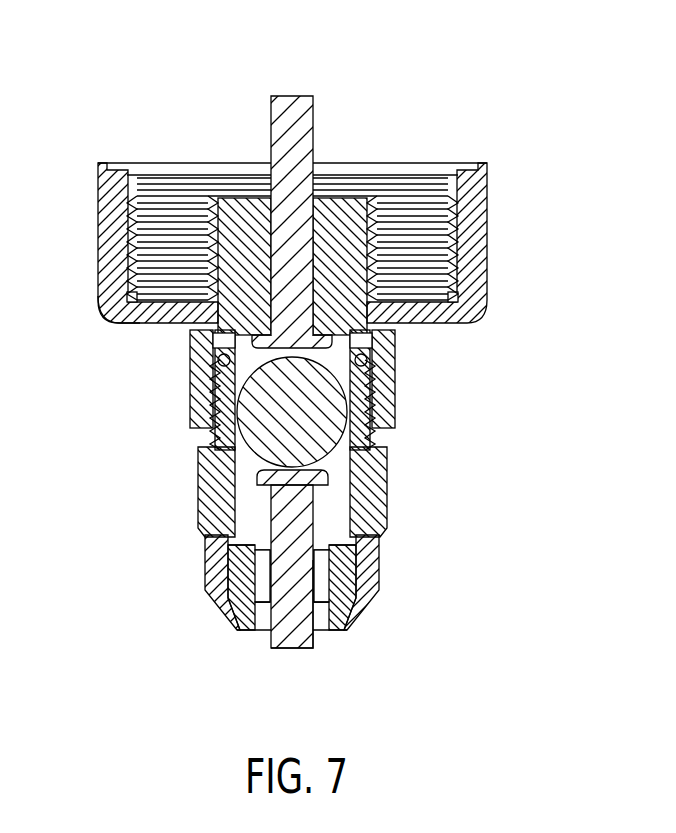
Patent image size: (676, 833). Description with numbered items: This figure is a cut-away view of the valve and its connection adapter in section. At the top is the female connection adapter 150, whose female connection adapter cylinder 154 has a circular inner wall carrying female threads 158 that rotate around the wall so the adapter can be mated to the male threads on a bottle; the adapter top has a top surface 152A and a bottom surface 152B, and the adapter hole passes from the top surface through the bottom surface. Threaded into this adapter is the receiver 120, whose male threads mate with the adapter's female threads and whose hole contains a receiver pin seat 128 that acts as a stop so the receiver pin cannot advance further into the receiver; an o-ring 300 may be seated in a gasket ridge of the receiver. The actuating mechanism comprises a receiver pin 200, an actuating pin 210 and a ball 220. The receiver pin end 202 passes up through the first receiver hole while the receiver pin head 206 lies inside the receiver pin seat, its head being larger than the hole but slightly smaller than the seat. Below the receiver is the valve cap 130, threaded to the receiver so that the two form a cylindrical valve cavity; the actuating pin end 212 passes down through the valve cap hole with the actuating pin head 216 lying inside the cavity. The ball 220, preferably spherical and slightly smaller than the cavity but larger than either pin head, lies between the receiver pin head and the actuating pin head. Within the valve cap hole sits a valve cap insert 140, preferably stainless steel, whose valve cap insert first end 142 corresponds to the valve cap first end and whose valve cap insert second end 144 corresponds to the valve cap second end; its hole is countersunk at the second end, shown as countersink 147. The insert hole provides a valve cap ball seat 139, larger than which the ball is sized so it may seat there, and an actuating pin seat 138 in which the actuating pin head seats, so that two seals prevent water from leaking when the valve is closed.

The receiver pin end 202 is at (296, 96).
The receiver pin 200 is at (346, 359).
The female threads 158 is at (187, 197).
The bottom surface 152B is at (132, 297).
The top surface 152A is at (130, 323).
The female connection adapter cylinder 154 is at (487, 215).
The female connection adapter 150 is at (304, 286).
The o-ring 300 is at (375, 338).
The receiver 120 is at (190, 350).
The receiver pin head 206 is at (352, 375).
The receiver pin seat 128 is at (212, 407).
The ball 220 is at (370, 420).
The valve cap 130 is at (198, 478).
The actuating pin head 216 is at (355, 488).
The valve cap insert first end 142 is at (237, 537).
The valve cap ball seat 139 is at (335, 545).
The actuating pin seat 138 is at (322, 583).
The valve cap insert 140 is at (215, 623).
The actuating pin 210 is at (350, 600).
The valve cap insert second end 144 is at (245, 630).
The countersink 147 is at (270, 602).
The actuating pin end 212 is at (292, 648).